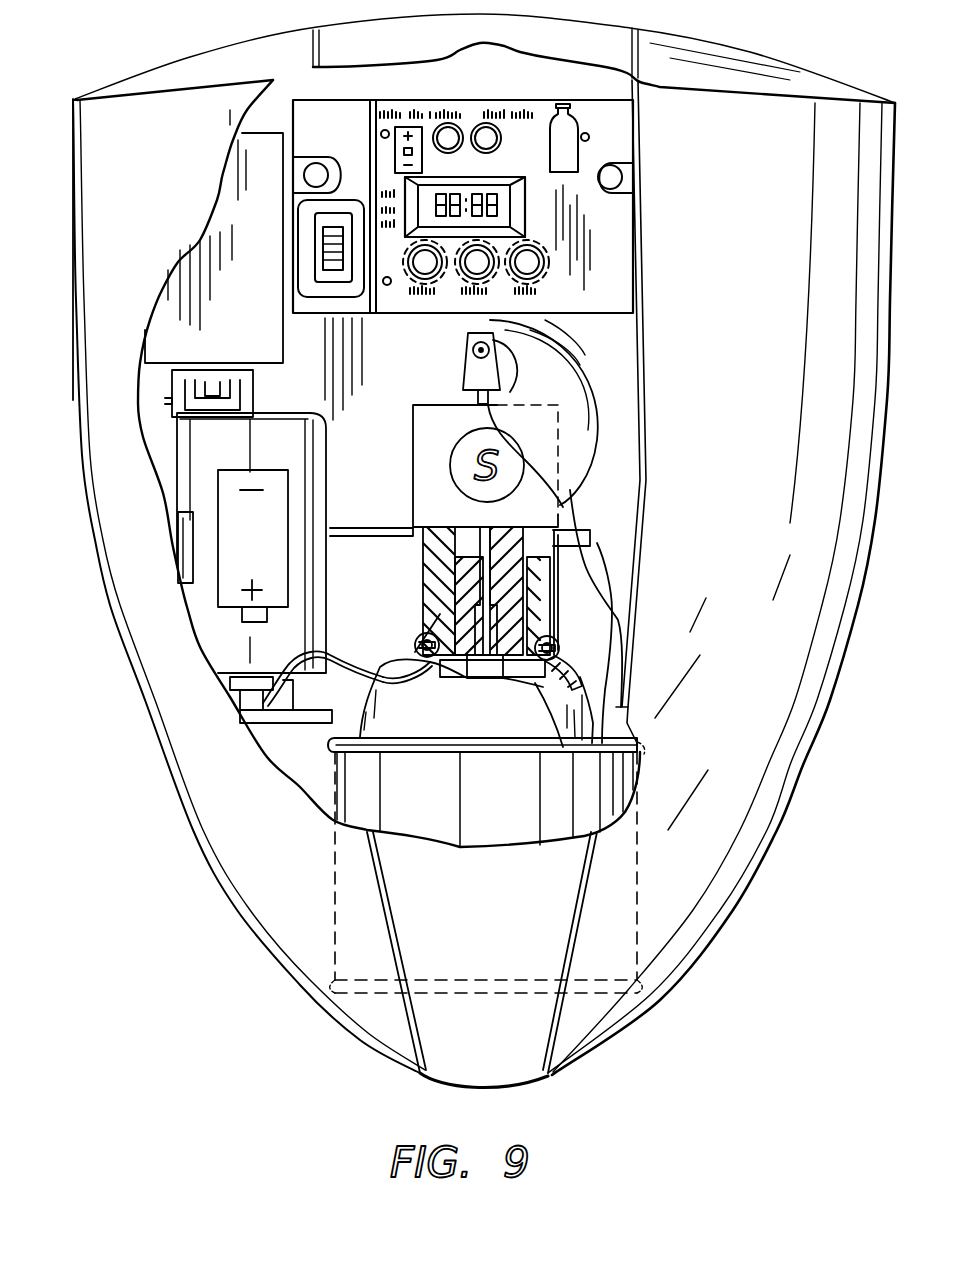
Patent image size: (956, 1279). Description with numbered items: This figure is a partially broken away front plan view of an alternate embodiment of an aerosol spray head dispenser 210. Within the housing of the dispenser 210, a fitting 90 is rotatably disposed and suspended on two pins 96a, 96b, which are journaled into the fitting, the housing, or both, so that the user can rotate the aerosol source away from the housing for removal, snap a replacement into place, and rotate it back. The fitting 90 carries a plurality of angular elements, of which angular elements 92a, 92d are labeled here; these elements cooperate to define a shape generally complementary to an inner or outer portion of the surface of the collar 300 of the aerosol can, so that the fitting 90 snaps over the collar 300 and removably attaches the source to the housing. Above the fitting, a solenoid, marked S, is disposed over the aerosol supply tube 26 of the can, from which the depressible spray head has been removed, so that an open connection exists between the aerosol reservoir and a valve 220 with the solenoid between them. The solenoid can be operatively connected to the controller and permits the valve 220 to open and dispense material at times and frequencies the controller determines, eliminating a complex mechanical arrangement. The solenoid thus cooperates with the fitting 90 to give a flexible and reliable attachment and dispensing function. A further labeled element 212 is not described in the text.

The dispenser 210 is at (157, 54).
The hull shell 212 is at (107, 582).
The valve 220 is at (463, 360).
The pin 96a is at (363, 530).
The pin 96b is at (632, 618).
The fitting 90 is at (420, 590).
The aerosol supply tube 26 is at (430, 616).
The collar 300 is at (428, 657).
The angular element 92a is at (455, 665).
The angular element 92d is at (567, 722).